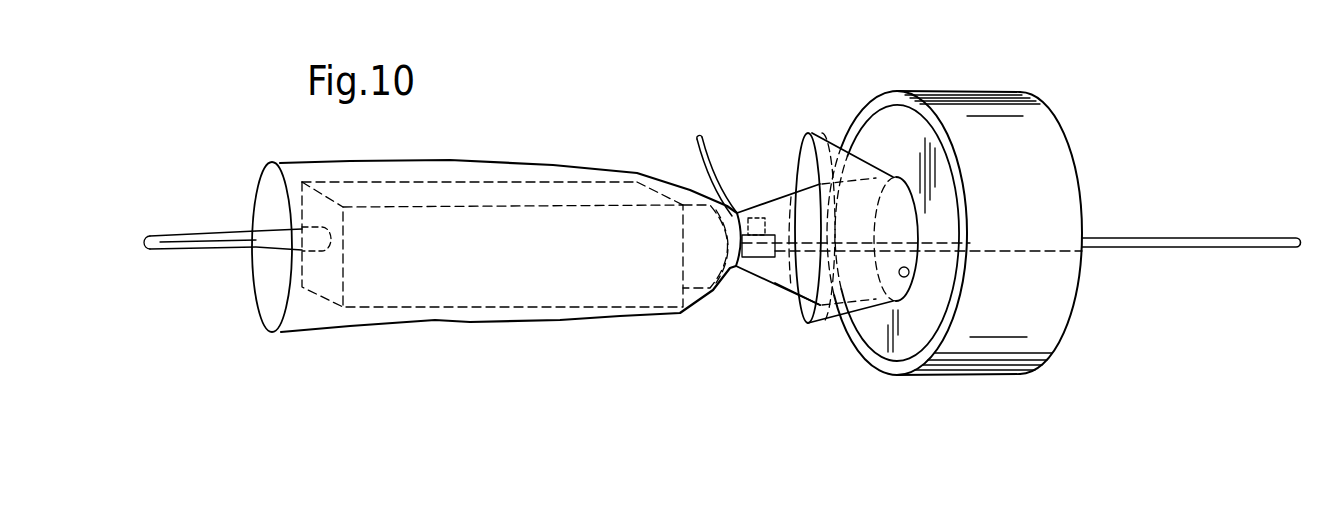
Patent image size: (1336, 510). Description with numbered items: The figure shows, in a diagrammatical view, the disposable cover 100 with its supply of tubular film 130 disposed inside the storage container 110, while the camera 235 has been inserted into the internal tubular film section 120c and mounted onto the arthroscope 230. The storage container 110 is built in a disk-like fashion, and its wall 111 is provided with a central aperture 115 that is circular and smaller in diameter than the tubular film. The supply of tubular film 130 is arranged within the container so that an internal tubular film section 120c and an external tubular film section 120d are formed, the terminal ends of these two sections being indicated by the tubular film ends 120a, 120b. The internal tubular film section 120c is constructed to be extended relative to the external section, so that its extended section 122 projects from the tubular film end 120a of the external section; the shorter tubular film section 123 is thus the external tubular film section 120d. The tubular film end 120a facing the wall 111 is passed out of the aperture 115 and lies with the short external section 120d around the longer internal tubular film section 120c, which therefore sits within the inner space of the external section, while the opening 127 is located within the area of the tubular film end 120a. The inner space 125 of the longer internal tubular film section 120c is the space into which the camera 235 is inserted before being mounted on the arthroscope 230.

The disposable cover 100 is at (672, 148).
The storage container 110 is at (1057, 150).
The wall 111 is at (940, 172).
The central aperture 115 is at (907, 276).
The tubular film end 120a is at (797, 322).
The tubular film end 120b is at (269, 333).
The internal tubular film section 120c is at (472, 323).
The external tubular film section 120d is at (822, 138).
The extended section 122 is at (572, 312).
The shorter tubular film section 123 is at (855, 163).
The inner space 125 is at (270, 187).
The opening 127 is at (797, 301).
The supply of tubular film 130 is at (1010, 118).
The arthroscope 230 is at (755, 218).
The camera 235 is at (495, 197).